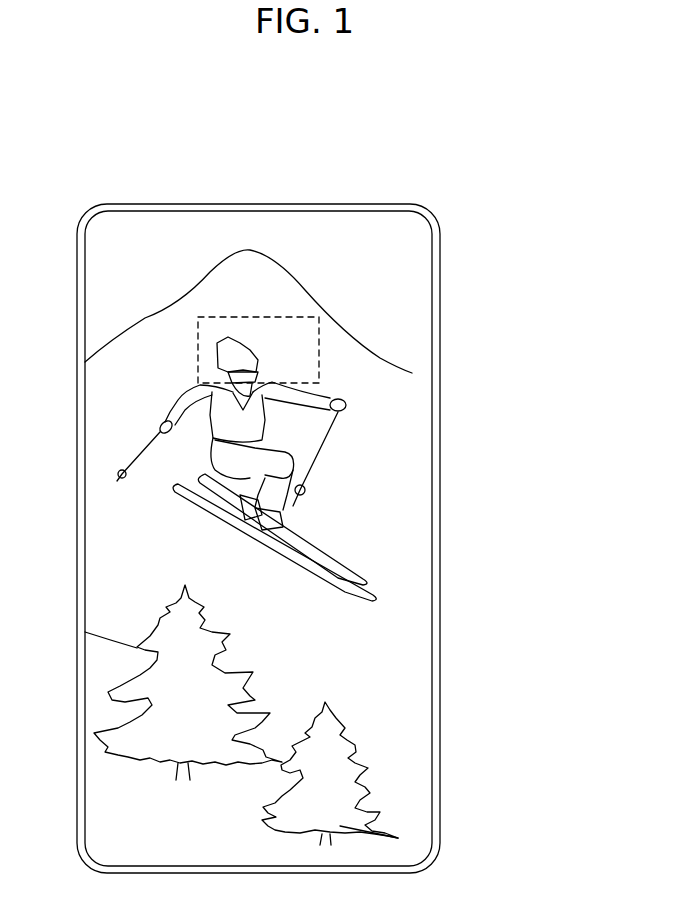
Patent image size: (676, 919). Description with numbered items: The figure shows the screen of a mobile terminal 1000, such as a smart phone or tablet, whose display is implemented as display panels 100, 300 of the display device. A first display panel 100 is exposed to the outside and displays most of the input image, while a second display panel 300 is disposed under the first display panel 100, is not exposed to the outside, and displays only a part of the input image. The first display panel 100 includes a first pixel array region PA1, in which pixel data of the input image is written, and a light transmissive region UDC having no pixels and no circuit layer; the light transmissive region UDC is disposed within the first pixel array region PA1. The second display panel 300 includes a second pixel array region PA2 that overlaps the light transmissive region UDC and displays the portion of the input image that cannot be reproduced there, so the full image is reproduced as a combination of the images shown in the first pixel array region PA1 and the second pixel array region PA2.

The mobile terminal 1000 is at (102, 128).
The first display panel 100 is at (330, 508).
The second display panel 300 is at (469, 298).
The first pixel array region PA1 is at (170, 257).
The second pixel array region PA2 is at (305, 345).
The light transmissive region UDC is at (273, 316).